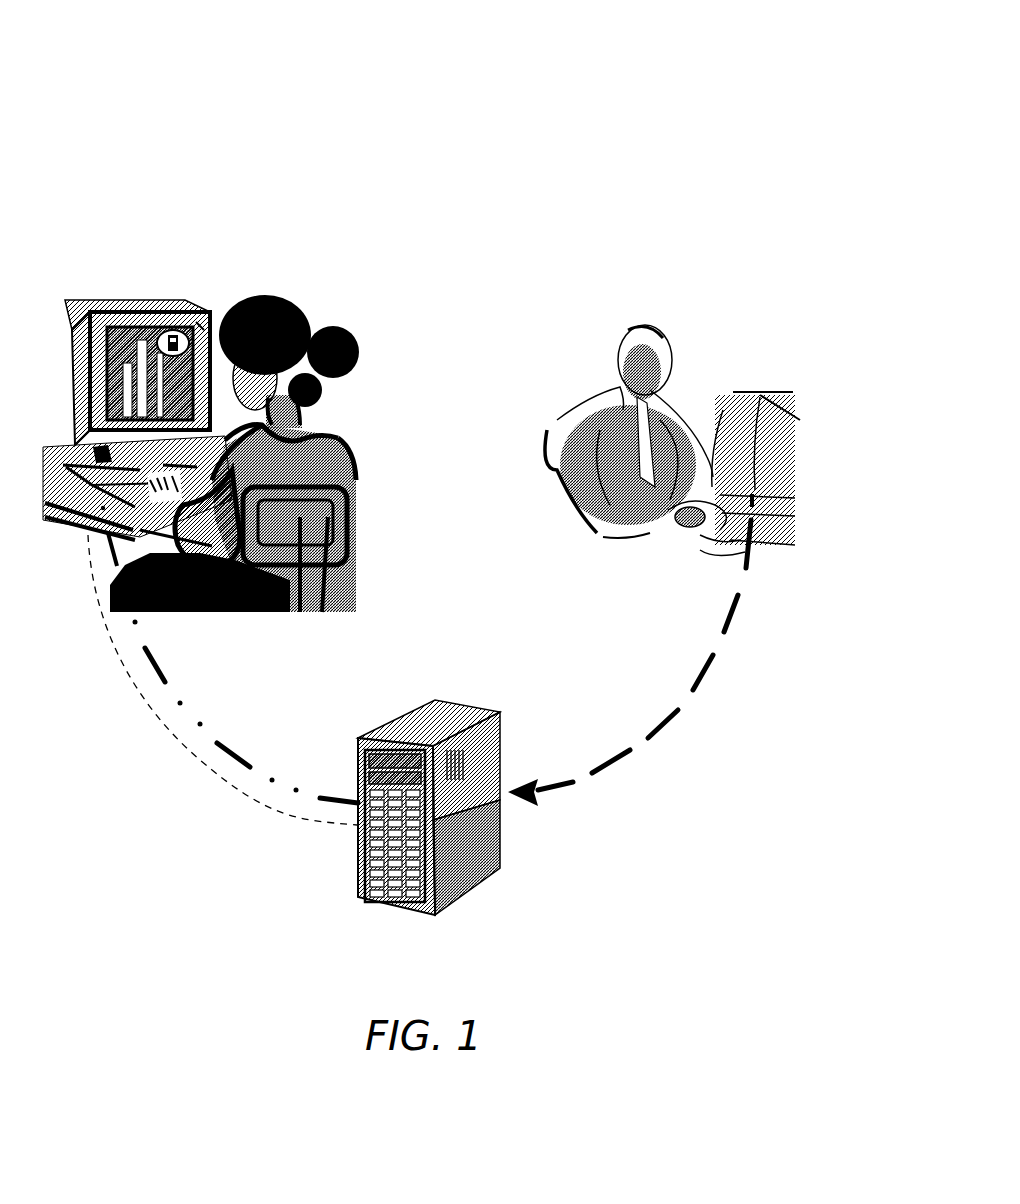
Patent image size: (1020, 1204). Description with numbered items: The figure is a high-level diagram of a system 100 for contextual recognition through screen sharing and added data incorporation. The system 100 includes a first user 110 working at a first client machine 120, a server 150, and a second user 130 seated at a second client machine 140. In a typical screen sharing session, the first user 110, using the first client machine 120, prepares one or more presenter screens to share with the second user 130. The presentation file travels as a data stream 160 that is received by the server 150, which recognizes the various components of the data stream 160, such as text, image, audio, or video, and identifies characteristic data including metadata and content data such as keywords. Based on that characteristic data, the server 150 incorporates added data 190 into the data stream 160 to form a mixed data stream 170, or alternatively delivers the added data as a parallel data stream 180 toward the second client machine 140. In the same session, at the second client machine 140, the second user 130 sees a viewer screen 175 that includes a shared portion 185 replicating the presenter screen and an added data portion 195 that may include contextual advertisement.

The system 100 is at (451, 92).
The first user 110 is at (572, 507).
The first client machine 120 is at (770, 392).
The second user 130 is at (270, 432).
The second client machine 140 is at (133, 401).
The server 150 is at (452, 715).
The data stream 160 is at (738, 608).
The mixed data stream 170 is at (155, 672).
The viewer screen 175 is at (114, 328).
The parallel data stream 180 is at (225, 773).
The shared portion 185 is at (150, 363).
The added data 190 is at (200, 724).
The added data portion 195 is at (197, 327).